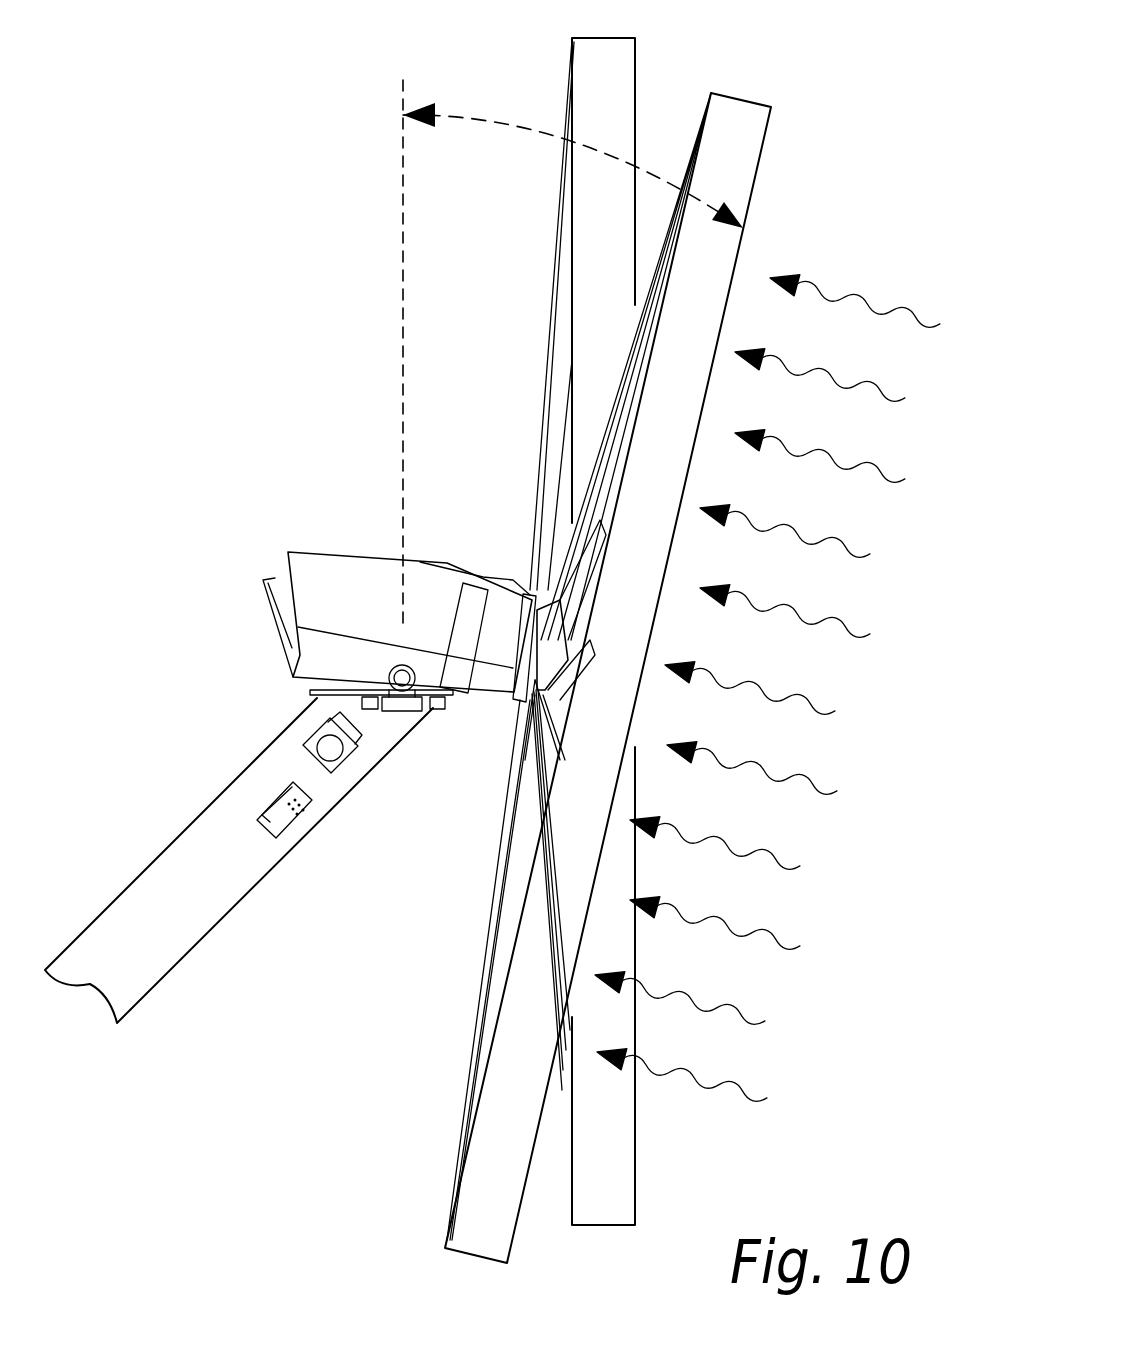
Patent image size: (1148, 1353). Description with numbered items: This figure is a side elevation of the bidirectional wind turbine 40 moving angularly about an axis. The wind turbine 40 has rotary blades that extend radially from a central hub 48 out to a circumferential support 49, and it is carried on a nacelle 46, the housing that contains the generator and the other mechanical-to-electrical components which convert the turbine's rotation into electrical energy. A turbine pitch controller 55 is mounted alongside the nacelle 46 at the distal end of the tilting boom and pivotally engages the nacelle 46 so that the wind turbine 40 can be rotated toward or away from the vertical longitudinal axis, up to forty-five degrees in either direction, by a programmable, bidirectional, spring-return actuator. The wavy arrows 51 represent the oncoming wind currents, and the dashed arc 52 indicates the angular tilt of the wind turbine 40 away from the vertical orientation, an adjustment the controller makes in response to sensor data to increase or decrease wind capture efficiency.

The wind turbine 40 is at (752, 78).
The nacelle 46 is at (353, 580).
The central hub 48 is at (340, 752).
The circumferential support 49 is at (274, 827).
The wind 51 is at (897, 483).
The tilt angle 52 is at (518, 126).
The turbine pitch controller 55 is at (402, 683).